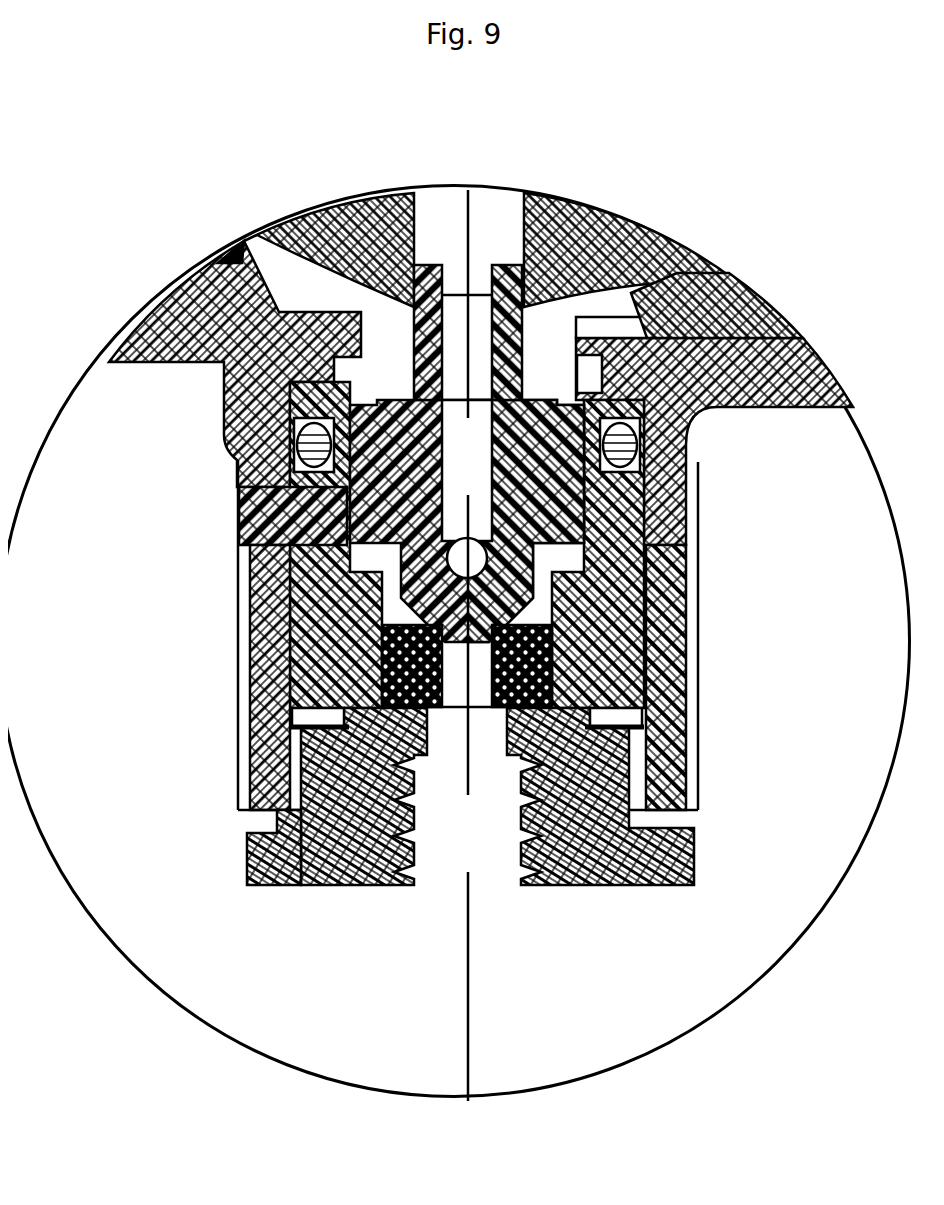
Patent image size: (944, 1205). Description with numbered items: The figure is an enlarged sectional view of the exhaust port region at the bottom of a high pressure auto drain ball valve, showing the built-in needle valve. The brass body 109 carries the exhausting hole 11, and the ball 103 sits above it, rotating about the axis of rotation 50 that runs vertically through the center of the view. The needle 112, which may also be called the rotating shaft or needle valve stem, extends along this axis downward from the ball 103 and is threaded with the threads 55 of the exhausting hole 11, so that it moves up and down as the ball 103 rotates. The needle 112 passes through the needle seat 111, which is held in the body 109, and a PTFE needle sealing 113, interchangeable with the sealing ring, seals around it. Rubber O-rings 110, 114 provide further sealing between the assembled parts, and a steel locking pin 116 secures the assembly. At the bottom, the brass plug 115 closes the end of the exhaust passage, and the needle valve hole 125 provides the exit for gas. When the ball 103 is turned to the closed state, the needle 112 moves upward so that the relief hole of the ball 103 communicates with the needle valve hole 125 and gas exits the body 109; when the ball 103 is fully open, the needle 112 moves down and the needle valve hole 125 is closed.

The body 109 is at (162, 304).
The ball 103 is at (302, 214).
The needle 112 is at (447, 299).
The threads 55 is at (548, 391).
The O-ring 110 is at (278, 436).
The locking pin 116 is at (238, 494).
The needle seat 111 is at (295, 584).
The exhausting hole 11 is at (252, 623).
The O-ring 114 is at (312, 704).
The needle sealing 113 is at (535, 661).
The plug 115 is at (325, 867).
The needle valve hole 125 is at (447, 837).
The axis of rotation 50 is at (465, 1024).